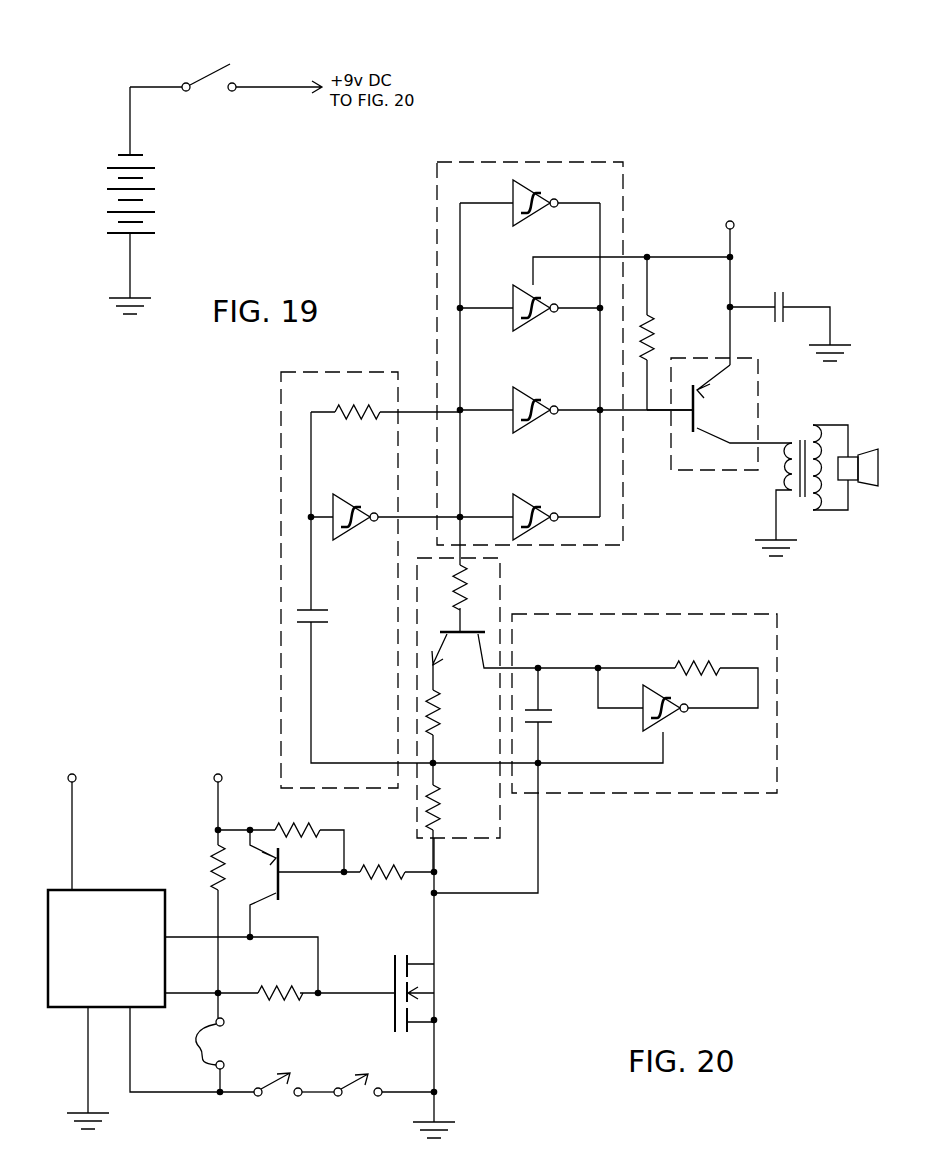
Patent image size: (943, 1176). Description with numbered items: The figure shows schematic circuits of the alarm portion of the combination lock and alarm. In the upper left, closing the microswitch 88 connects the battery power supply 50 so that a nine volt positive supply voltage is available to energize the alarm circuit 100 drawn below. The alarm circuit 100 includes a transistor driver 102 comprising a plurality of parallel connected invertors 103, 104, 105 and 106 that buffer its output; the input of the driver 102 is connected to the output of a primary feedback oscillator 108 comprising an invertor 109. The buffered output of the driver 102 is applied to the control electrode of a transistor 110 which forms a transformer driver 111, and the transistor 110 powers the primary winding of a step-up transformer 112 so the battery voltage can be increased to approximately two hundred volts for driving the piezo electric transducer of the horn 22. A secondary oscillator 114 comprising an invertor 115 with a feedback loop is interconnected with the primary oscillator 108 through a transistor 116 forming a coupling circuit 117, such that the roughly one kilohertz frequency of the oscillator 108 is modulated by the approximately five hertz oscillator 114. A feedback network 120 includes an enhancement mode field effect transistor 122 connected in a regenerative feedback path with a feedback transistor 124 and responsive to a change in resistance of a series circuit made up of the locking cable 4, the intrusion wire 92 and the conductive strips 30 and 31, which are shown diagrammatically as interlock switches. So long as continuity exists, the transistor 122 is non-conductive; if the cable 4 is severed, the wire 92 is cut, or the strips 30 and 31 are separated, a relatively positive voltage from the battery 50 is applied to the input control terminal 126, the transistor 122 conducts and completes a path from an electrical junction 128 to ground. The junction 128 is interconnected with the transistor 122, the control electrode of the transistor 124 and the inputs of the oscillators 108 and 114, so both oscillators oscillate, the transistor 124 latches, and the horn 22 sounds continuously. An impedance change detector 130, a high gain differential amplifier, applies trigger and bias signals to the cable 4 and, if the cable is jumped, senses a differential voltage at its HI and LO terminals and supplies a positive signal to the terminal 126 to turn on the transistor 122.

In FIG. 19, the microswitch 88 is at (220, 77).
In FIG. 19, the battery power supply 50 is at (143, 218).
In FIG. 20, the alarm circuit 100 is at (593, 886).
In FIG. 20, the transistor driver 102 is at (508, 162).
In FIG. 20, the invertor 103 is at (531, 226).
In FIG. 20, the invertor 104 is at (533, 334).
In FIG. 20, the invertor 105 is at (533, 436).
In FIG. 20, the invertor 106 is at (528, 493).
In FIG. 20, the primary feedback oscillator 108 is at (282, 532).
In FIG. 20, the invertor 109 is at (365, 496).
In FIG. 20, the transistor 110 is at (700, 418).
In FIG. 20, the transformer driver 111 is at (672, 458).
In FIG. 20, the step-up transformer 112 is at (800, 502).
In FIG. 20, the horn 22 is at (873, 483).
In FIG. 20, the transistor 116 is at (448, 630).
In FIG. 20, the coupling circuit 117 is at (500, 607).
In FIG. 20, the invertor 115 is at (667, 720).
In FIG. 20, the secondary oscillator 114 is at (565, 795).
In FIG. 20, the impedance change detector 130 is at (122, 945).
In FIG. 20, the feedback transistor 124 is at (283, 880).
In FIG. 20, the input control terminal 126 is at (316, 990).
In FIG. 20, the feedback network 120 is at (398, 936).
In FIG. 20, the electrical junction 128 is at (438, 897).
In FIG. 20, the enhancement mode field effect transistor 122 is at (425, 975).
In FIG. 20, the locking cable 4 is at (215, 1066).
In FIG. 20, the intrusion wire 92 is at (264, 1088).
In FIG. 20, the conductive strip 30 is at (339, 1084).
In FIG. 20, the conductive strip 31 is at (384, 1085).